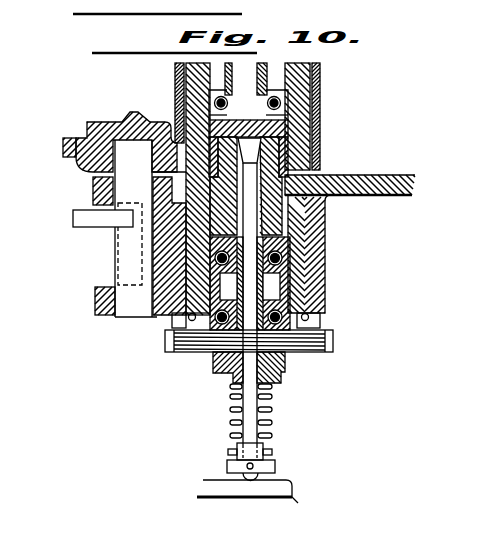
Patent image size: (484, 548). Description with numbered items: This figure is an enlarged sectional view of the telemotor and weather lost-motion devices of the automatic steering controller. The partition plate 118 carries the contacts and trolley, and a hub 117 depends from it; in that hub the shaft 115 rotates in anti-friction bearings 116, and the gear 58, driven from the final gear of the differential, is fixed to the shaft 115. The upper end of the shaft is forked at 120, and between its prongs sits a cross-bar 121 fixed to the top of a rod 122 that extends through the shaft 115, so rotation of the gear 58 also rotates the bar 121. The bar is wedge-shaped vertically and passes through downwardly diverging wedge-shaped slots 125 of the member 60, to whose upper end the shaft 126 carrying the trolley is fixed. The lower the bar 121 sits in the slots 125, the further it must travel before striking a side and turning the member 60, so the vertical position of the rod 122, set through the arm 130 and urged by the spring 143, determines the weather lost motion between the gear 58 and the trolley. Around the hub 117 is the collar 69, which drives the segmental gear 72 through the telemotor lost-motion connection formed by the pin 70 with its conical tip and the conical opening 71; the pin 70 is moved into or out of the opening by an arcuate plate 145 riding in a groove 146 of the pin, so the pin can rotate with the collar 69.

The gear 58 is at (333, 338).
The member 60 is at (283, 173).
The collar 69 is at (327, 268).
The pin 70 is at (120, 246).
The conical opening 71 is at (110, 163).
The segmental gear 72 is at (63, 143).
The shaft 115 is at (236, 387).
The anti-friction bearings 116 is at (282, 328).
The hub 117 is at (190, 334).
The partition plate 118 is at (380, 177).
The forked upper end 120 is at (218, 243).
The cross-bar 121 is at (286, 148).
The rod 122 is at (272, 398).
The wedge-shaped slots 125 is at (273, 213).
The shaft 126 is at (243, 78).
The arm 130 is at (265, 500).
The spring 143 is at (275, 452).
The arcuate plate 145 is at (75, 220).
The groove 146 is at (123, 205).